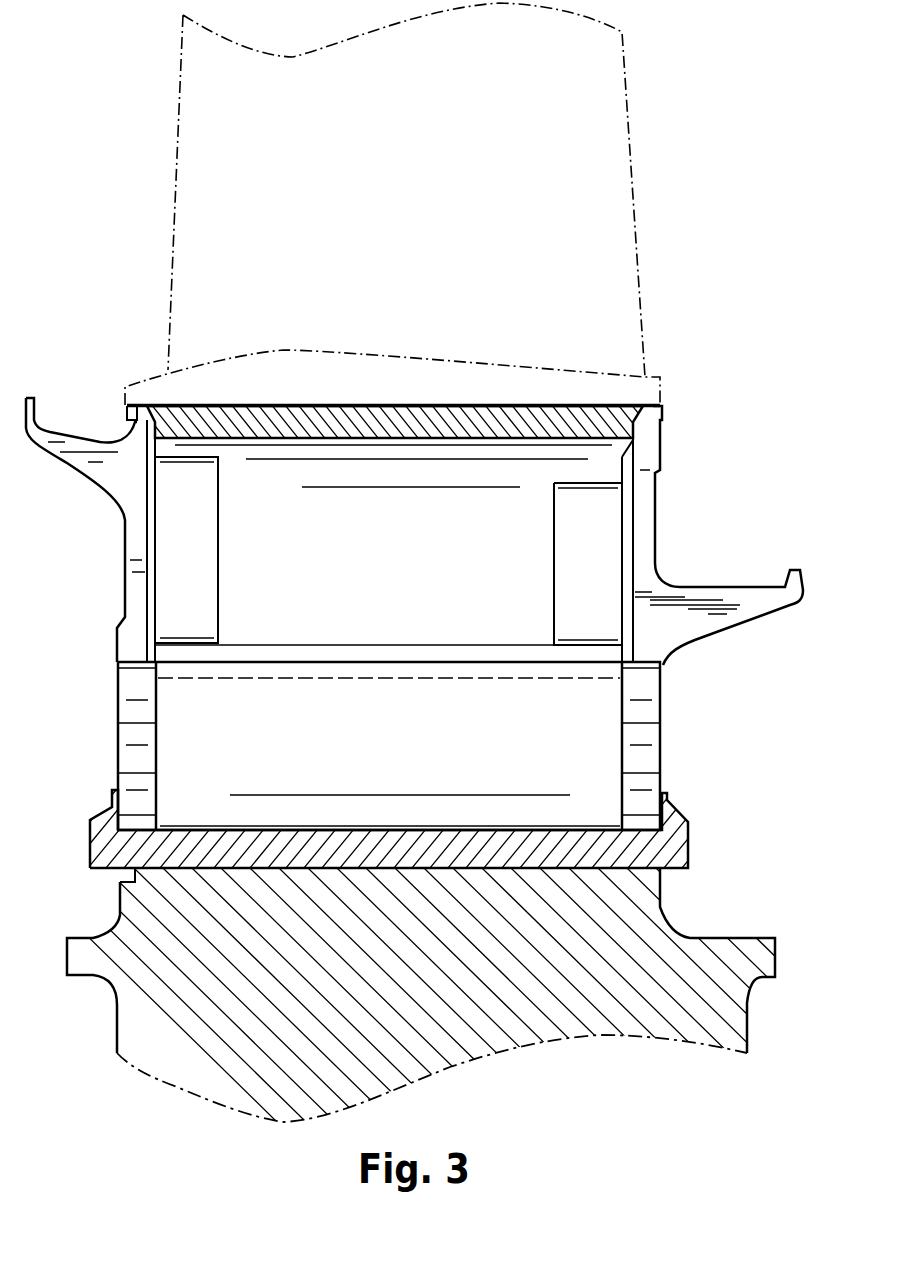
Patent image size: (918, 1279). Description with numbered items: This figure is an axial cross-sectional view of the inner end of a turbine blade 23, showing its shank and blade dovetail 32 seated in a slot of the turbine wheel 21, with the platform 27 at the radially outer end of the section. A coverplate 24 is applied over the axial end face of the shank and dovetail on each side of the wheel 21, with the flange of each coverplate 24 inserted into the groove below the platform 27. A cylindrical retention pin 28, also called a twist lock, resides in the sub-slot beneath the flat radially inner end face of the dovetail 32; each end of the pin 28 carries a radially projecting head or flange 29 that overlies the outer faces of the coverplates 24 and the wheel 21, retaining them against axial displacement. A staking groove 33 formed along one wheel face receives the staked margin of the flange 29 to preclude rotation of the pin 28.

The turbine wheel 21 is at (210, 1043).
The turbine blade 23 is at (173, 205).
The coverplate 24 is at (135, 582).
The platform 27 is at (177, 392).
The retention pin 28 is at (218, 853).
The flange 29 is at (103, 812).
The blade dovetail 32 is at (200, 735).
The staking groove 33 is at (120, 876).